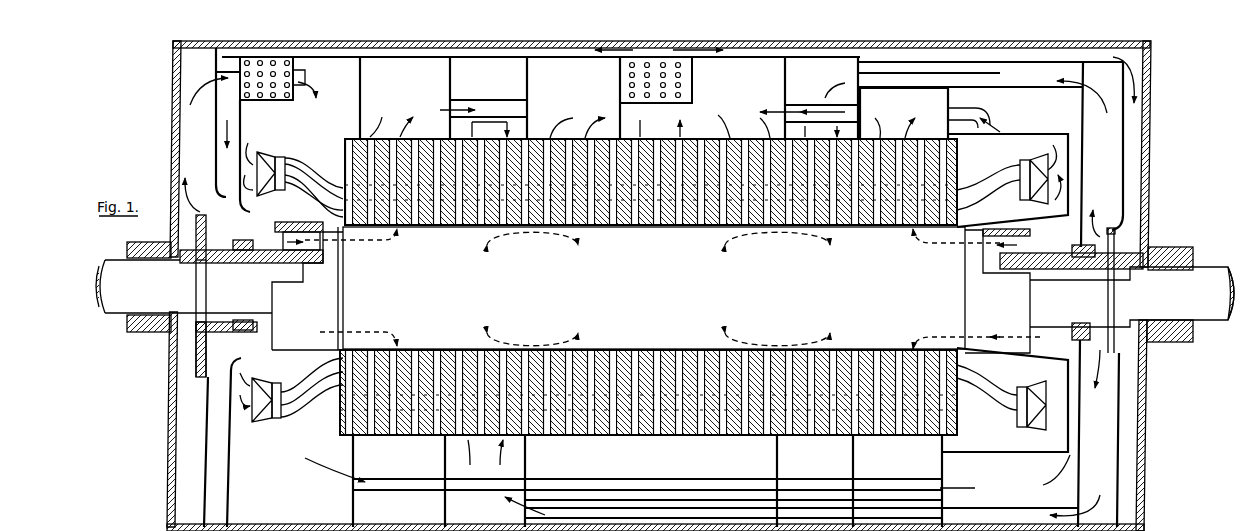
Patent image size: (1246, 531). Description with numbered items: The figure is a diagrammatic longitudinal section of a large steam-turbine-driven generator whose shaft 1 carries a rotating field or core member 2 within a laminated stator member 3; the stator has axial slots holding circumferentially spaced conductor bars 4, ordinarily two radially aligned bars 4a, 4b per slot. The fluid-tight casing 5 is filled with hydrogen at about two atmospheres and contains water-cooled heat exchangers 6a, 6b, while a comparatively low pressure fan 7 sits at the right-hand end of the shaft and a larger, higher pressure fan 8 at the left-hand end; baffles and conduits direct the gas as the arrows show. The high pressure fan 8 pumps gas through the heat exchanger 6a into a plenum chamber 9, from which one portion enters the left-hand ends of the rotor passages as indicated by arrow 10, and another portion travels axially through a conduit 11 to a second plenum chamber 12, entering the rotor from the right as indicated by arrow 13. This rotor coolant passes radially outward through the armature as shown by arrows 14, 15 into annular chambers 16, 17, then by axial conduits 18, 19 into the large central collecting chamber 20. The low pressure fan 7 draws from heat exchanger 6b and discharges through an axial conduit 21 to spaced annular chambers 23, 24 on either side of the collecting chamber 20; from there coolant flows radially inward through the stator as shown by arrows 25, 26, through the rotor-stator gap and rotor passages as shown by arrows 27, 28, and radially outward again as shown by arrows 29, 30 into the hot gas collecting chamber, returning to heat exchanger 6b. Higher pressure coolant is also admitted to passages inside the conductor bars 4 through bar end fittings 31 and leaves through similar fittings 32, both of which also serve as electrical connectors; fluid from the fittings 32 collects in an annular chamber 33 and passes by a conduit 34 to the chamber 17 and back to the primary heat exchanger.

The shaft 1 is at (118, 308).
The rotating field member 2 is at (452, 293).
The laminated stator member 3 is at (659, 189).
The conductor bars 4 is at (328, 172).
The conductor bar 4a is at (306, 190).
The conductor bar 4b is at (322, 166).
The casing 5 is at (172, 58).
The heat exchanger 6a is at (286, 99).
The heat exchanger 6b is at (688, 79).
The low pressure fan 7 is at (1118, 252).
The high pressure fan 8 is at (190, 216).
The plenum chamber 9 is at (329, 117).
The arrow 10 is at (280, 229).
The conduit 11 is at (408, 486).
The second plenum chamber 12 is at (1003, 487).
The arrow 13 is at (1053, 347).
The arrow 14 is at (391, 113).
The arrow 15 is at (895, 128).
The annular chamber 16 is at (418, 83).
The annular chamber 17 is at (908, 108).
The axial conduit 18 is at (500, 109).
The axial conduit 19 is at (811, 112).
The central collecting chamber 20 is at (598, 104).
The axial conduit 21 is at (1038, 85).
The annular chamber 23 is at (828, 471).
The annular chamber 24 is at (478, 517).
The arrow 25 is at (821, 131).
The arrow 26 is at (485, 324).
The arrow 27 is at (523, 245).
The arrow 28 is at (797, 246).
The arrow 29 is at (577, 123).
The arrow 30 is at (759, 98).
The bar end fittings 31 is at (277, 154).
The bar end fittings 32 is at (1029, 195).
The annular chamber 33 is at (990, 163).
The conduit 34 is at (986, 110).